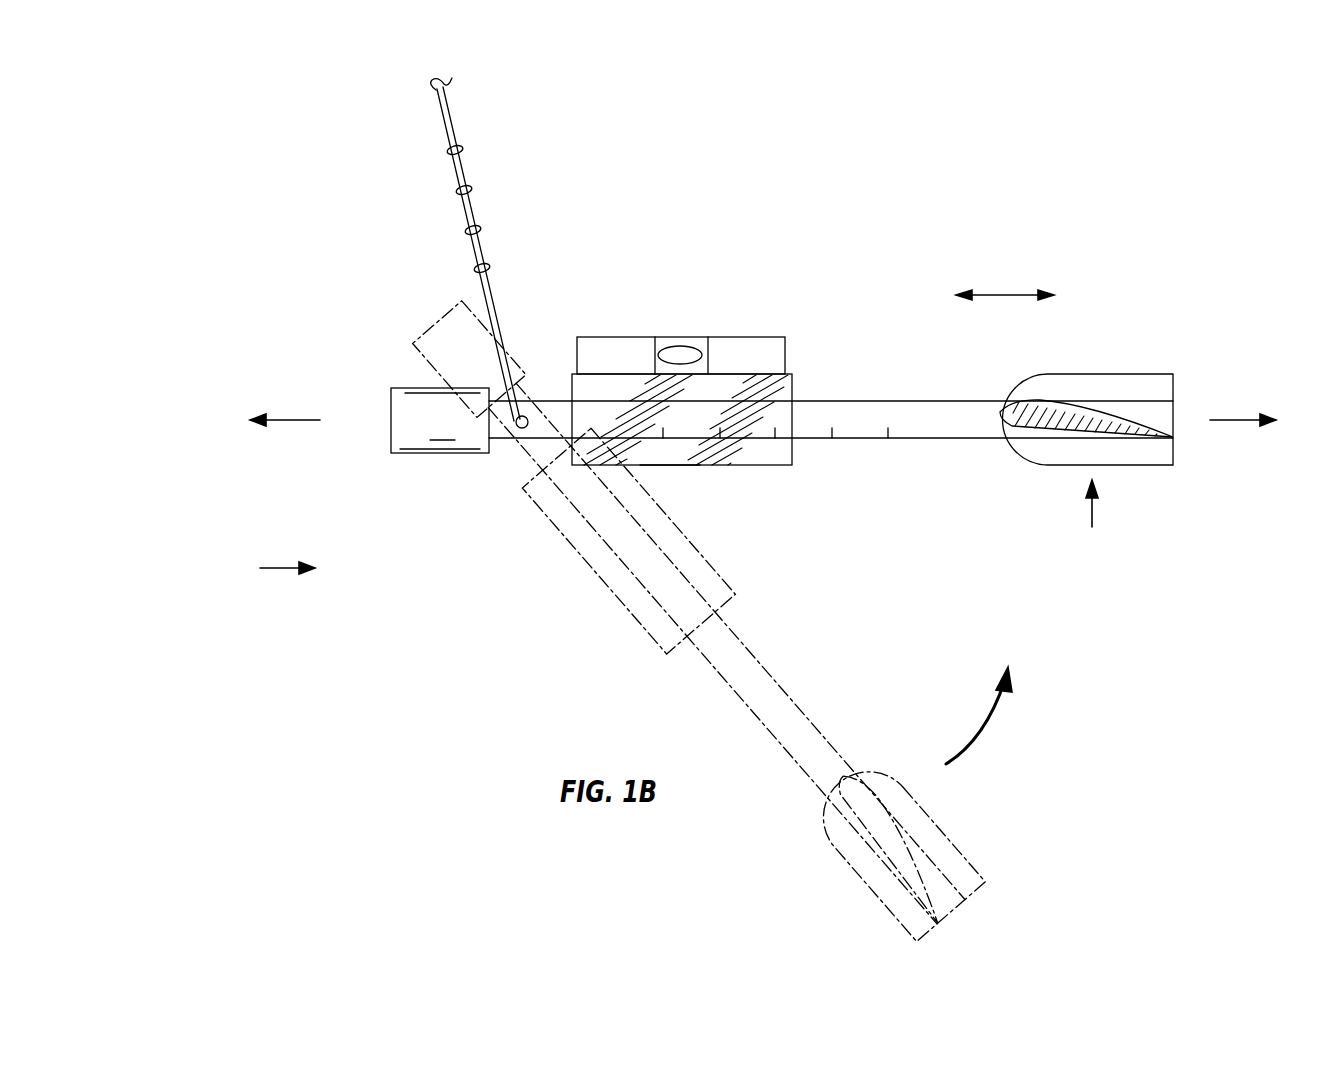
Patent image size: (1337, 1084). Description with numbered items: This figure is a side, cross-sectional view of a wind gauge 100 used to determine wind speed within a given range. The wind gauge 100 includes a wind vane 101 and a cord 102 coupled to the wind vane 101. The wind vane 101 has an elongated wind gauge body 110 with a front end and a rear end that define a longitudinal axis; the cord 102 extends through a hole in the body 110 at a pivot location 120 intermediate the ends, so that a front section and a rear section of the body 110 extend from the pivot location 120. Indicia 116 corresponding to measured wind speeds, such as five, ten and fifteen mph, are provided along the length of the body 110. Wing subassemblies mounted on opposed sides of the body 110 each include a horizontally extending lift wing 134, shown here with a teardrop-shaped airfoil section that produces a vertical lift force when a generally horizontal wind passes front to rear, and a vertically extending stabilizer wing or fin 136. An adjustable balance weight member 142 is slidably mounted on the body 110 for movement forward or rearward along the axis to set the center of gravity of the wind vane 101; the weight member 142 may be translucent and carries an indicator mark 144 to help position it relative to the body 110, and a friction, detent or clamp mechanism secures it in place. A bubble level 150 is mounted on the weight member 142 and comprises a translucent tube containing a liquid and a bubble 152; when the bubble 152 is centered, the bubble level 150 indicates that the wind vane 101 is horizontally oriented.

The wind gauge 100 is at (766, 158).
The wind vane 101 is at (725, 273).
The cord 102 is at (456, 122).
The wind gauge body 110 is at (852, 398).
The indicia 116 is at (657, 410).
The pivot location 120 is at (524, 440).
The lift wing 134 is at (1045, 425).
The stabilizer wing or fin 136 is at (1118, 378).
The adjustable balance weight member 142 is at (797, 382).
The indicator mark 144 is at (662, 452).
The bubble level 150 is at (573, 346).
The bubble 152 is at (676, 346).